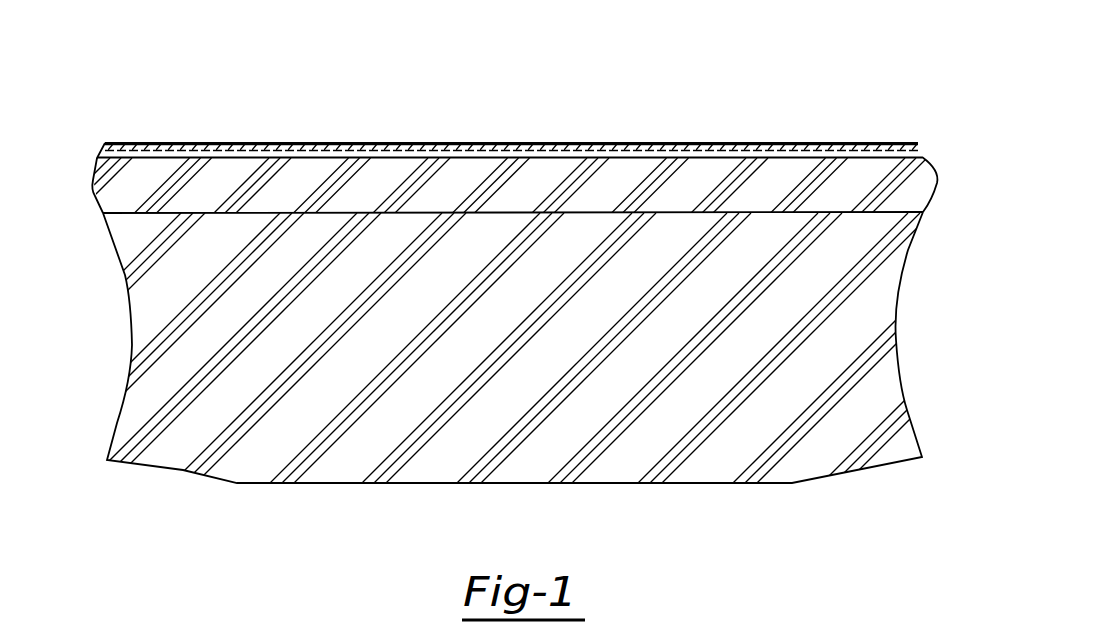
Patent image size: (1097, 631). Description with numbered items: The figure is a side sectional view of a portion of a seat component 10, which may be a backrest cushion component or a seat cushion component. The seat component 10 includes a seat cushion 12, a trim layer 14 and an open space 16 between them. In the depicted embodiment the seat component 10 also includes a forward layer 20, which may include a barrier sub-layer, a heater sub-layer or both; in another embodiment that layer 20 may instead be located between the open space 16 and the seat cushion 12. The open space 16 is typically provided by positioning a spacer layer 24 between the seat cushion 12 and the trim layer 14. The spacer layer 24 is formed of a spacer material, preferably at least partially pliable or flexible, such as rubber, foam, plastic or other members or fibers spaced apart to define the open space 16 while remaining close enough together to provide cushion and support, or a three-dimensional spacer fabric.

The seat component 10 is at (845, 108).
The seat cushion 12 is at (178, 473).
The trim layer 14 is at (253, 145).
The open space 16 is at (722, 168).
The forward layer 20 is at (632, 150).
The spacer layer 24 is at (94, 187).